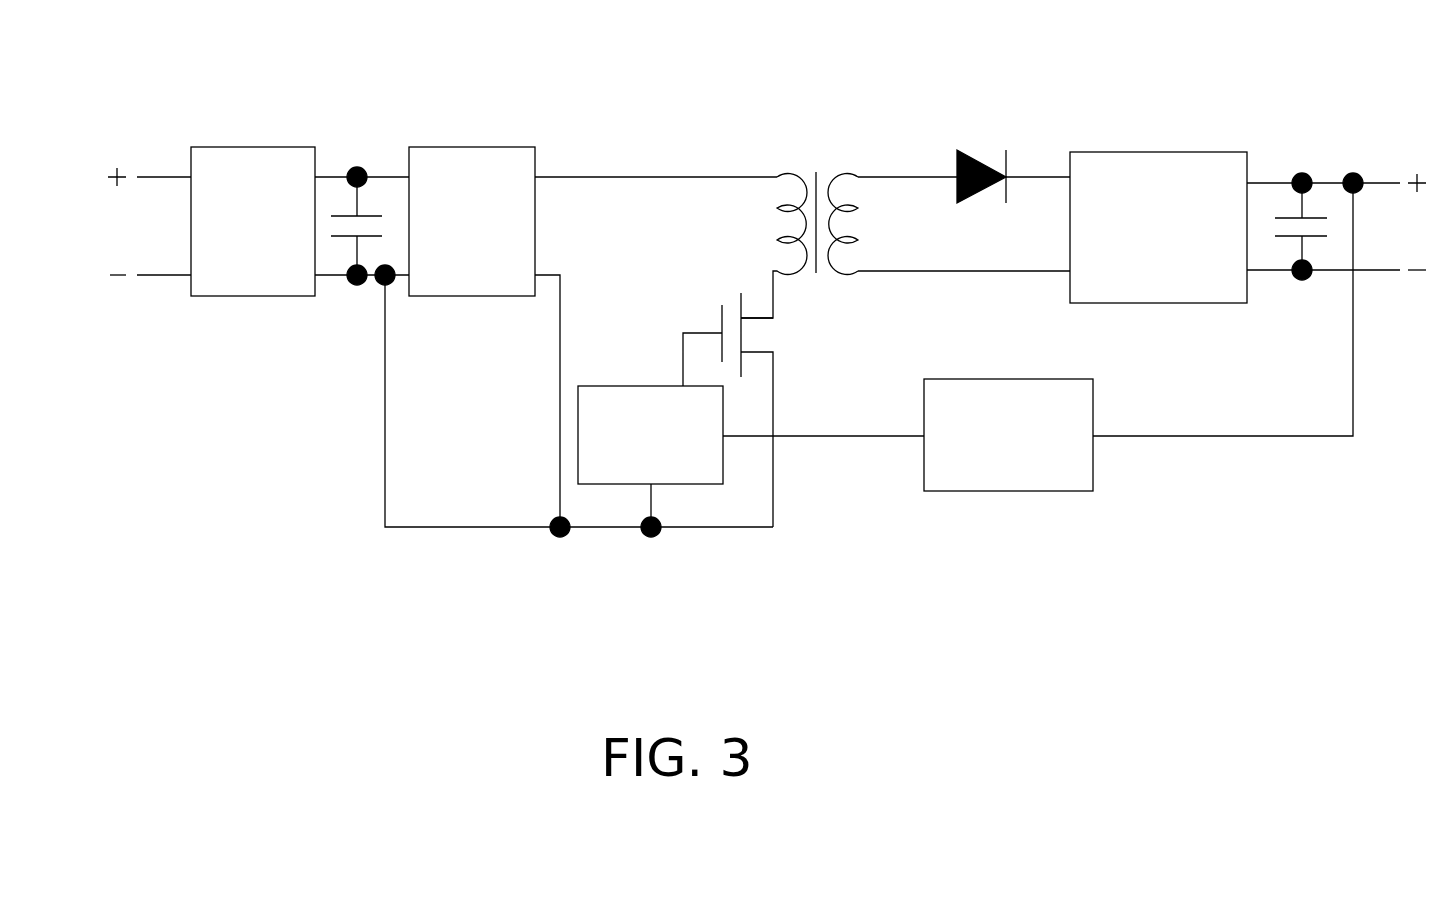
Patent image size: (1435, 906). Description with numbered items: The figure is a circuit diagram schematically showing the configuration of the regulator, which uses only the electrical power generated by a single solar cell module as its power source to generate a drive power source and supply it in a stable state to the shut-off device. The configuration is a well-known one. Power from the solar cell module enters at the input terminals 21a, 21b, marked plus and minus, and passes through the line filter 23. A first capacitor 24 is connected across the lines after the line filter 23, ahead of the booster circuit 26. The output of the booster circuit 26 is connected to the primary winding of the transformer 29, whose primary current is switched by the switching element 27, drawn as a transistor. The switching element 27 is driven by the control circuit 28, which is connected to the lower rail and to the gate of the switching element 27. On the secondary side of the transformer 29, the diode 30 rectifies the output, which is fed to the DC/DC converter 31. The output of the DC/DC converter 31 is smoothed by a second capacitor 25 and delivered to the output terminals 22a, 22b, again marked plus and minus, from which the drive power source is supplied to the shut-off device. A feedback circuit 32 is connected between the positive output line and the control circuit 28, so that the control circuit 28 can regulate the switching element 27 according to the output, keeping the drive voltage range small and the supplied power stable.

The input terminal 21a is at (160, 177).
The input terminal 21b is at (160, 275).
The output terminal 22a is at (1383, 183).
The output terminal 22b is at (1383, 270).
The line filter 23 is at (253, 147).
The capacitor 24 is at (375, 216).
The capacitor 25 is at (1315, 218).
The booster circuit 26 is at (490, 147).
The switching element 27 is at (745, 334).
The control circuit 28 is at (595, 386).
The transformer 29 is at (797, 177).
The diode 30 is at (957, 150).
The DC/DC converter 31 is at (1150, 152).
The feedback circuit 32 is at (1008, 491).